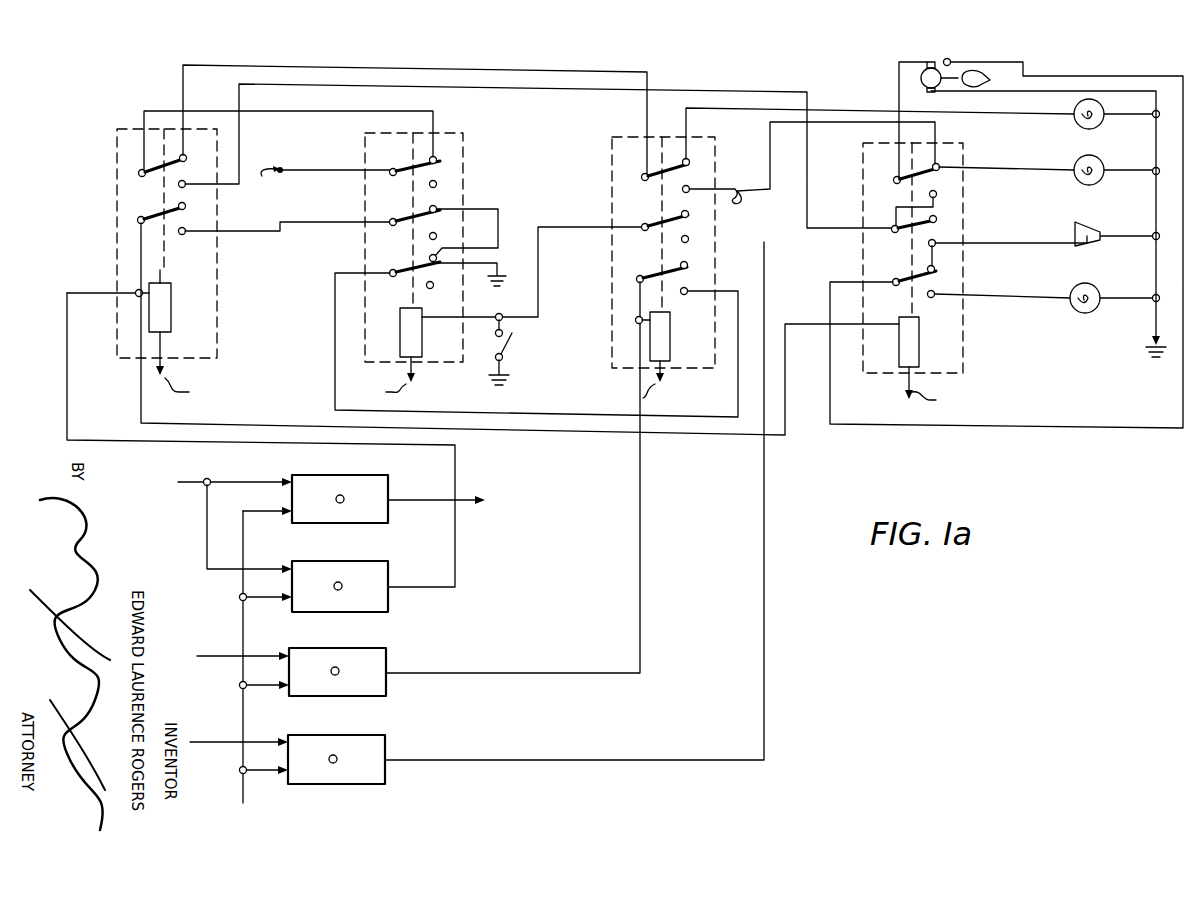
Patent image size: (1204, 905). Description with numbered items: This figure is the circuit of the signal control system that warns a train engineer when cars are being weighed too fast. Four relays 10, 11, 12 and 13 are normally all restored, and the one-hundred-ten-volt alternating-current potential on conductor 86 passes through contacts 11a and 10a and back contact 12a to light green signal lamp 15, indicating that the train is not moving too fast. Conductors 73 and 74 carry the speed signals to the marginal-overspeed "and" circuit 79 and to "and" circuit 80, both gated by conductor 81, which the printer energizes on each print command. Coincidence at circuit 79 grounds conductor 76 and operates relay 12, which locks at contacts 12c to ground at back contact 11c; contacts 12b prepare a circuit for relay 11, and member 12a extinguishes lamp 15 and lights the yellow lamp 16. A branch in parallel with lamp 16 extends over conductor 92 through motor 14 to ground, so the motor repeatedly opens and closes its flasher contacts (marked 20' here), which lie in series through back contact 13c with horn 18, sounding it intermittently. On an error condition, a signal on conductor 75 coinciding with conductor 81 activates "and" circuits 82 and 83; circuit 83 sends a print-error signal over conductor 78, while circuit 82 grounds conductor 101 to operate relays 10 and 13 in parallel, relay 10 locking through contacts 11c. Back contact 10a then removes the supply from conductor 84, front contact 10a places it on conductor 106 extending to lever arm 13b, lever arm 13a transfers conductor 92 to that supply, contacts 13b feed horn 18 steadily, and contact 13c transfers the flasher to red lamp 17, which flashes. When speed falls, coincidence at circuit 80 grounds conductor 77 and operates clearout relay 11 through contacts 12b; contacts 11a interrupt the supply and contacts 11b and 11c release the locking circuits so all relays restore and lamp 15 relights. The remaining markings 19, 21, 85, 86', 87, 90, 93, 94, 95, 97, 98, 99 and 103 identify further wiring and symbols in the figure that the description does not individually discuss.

The relay 10 is at (190, 362).
The contact of relay 10 10a is at (163, 160).
The clearout relay 11 is at (448, 370).
The contacts of relay 11 11a is at (410, 169).
The contacts of relay 11 11b is at (410, 219).
The back contact of relay 11 11c is at (410, 271).
The relay 12 is at (688, 372).
The back contact of relay 12 12a is at (656, 173).
The contacts of relay 12 12b is at (660, 215).
The contacts of relay 12 12c is at (657, 268).
The relay 13 is at (893, 373).
The lever arm of relay 13 13a is at (909, 174).
The contacts of relay 13 13b is at (906, 230).
The back contact of relay 13 13c is at (907, 277).
The motor 14 is at (918, 88).
The green signal lamp 15 is at (1075, 122).
The yellow warning light 16 is at (1074, 180).
The red lamp 17 is at (1078, 311).
The horn 18 is at (1090, 226).
The light source 19 is at (986, 81).
The lead 20' is at (1005, 62).
The switch 21 is at (507, 342).
The conductor 73 is at (223, 654).
The conductor 74 is at (218, 745).
The conductor 75 is at (196, 484).
The conductor 76 is at (470, 675).
The conductor 77 is at (466, 762).
The conductor 78 is at (428, 490).
The marginal overspeed and circuit 79 is at (386, 694).
The and circuit 80 is at (360, 784).
The conductor 81 is at (243, 793).
The and circuit 82 is at (388, 606).
The and circuit 83 is at (368, 523).
The conductor 84 is at (641, 66).
The conductor 85 is at (334, 111).
The conductor 86 is at (325, 168).
The ground 86' is at (1048, 227).
The ground 87 is at (506, 270).
The conductor 90 is at (812, 179).
The motor and flasher conductor 92 is at (898, 78).
The conductor 93 is at (1044, 428).
The conductor 94 is at (935, 262).
The conductor 95 is at (1020, 246).
The conductor 97 is at (1138, 170).
The conductor 98 is at (1022, 99).
The conductor 99 is at (538, 278).
The conductor 101 is at (455, 561).
The conductor 103 is at (597, 433).
The conductor 106 is at (567, 86).